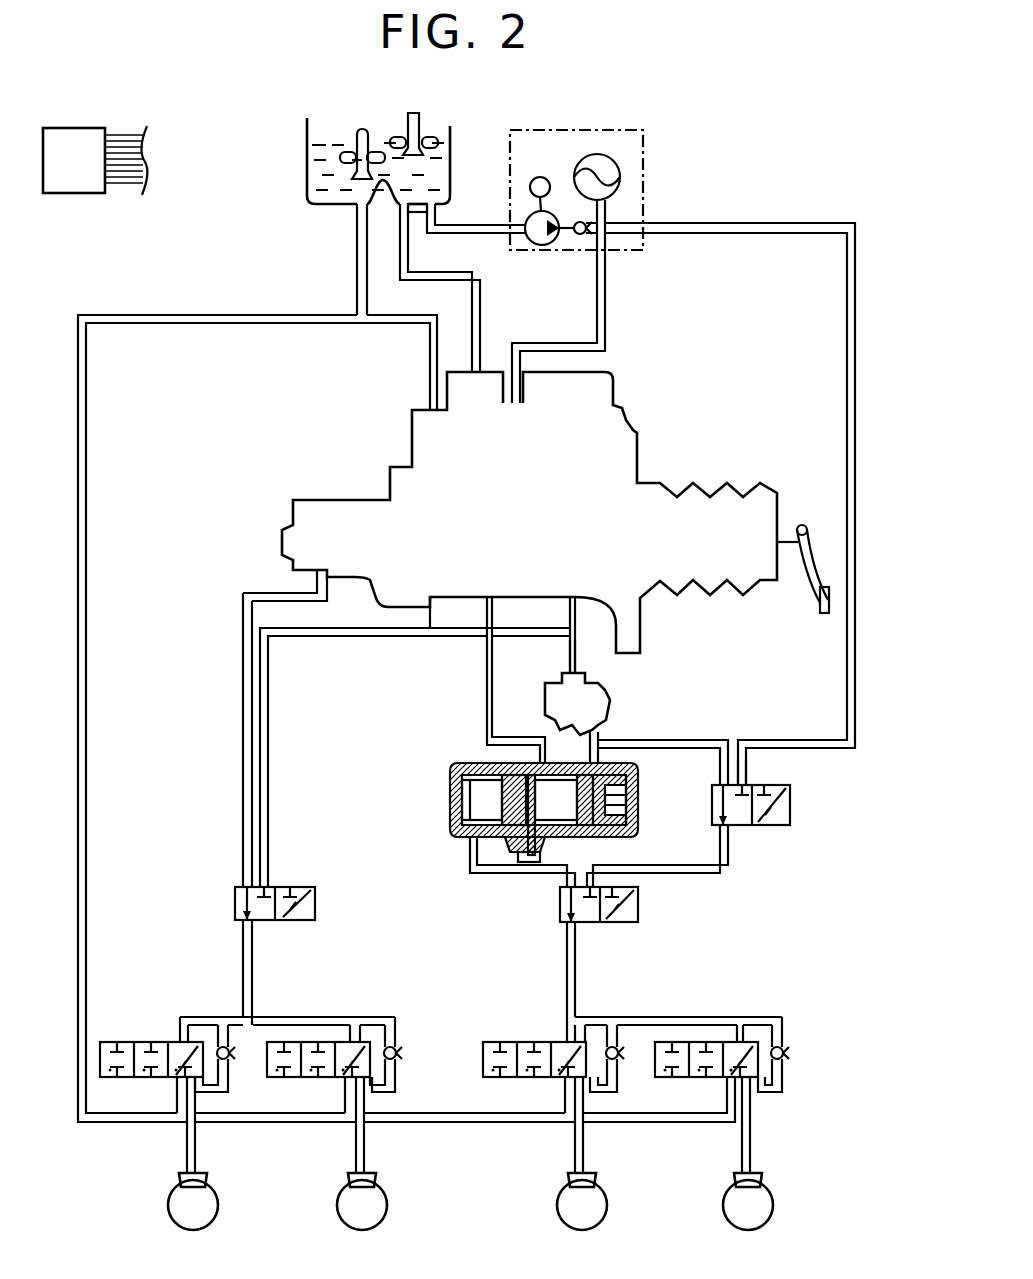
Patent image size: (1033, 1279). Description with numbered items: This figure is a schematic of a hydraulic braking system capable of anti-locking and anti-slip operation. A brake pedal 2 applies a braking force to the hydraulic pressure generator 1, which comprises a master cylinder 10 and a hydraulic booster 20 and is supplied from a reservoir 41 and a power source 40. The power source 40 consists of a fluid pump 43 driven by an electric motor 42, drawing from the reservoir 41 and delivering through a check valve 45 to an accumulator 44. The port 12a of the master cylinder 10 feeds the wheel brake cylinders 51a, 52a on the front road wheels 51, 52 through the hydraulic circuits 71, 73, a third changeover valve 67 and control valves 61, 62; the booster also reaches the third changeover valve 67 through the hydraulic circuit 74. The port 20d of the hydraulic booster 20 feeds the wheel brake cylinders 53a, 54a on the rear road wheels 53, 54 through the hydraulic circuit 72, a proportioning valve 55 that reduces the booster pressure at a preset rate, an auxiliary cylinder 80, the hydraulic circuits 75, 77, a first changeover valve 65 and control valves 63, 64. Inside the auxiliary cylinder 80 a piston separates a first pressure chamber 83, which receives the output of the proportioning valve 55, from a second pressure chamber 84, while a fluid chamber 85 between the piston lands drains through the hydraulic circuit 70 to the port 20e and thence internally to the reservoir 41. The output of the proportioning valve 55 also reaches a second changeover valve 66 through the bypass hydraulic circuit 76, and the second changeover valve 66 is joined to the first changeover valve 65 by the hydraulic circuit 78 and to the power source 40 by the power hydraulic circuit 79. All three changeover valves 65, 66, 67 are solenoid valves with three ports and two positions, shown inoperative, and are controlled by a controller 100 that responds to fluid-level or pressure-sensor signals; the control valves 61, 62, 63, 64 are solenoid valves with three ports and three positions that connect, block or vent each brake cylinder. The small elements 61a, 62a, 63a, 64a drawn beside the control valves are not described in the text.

The hydraulic pressure generator 1 is at (536, 515).
The brake pedal 2 is at (818, 602).
The master cylinder 10 is at (409, 494).
The port 12a is at (333, 578).
The hydraulic booster 20 is at (603, 515).
The port 20d is at (539, 635).
The port 20e is at (461, 616).
The power source 40 is at (615, 198).
The reservoir 41 is at (306, 190).
The electric motor 42 is at (538, 177).
The fluid pump 43 is at (536, 243).
The accumulator 44 is at (598, 155).
The check valve 45 is at (578, 240).
The front road wheel 51 is at (216, 1206).
The wheel brake cylinder 51a is at (200, 1175).
The front road wheel 52 is at (385, 1206).
The wheel brake cylinder 52a is at (369, 1175).
The rear road wheel 53 is at (605, 1206).
The wheel brake cylinder 53a is at (588, 1175).
The rear road wheel 54 is at (771, 1206).
The wheel brake cylinder 54a is at (756, 1175).
The proportioning valve 55 is at (602, 706).
The control valve 61 is at (170, 1042).
The check valve 61a is at (229, 1057).
The control valve 62 is at (335, 1042).
The check valve 62a is at (396, 1057).
The control valve 63 is at (540, 1042).
The check valve 63a is at (618, 1057).
The control valve 64 is at (715, 1042).
The check valve 64a is at (783, 1057).
The first changeover valve 65 is at (560, 900).
The second changeover valve 66 is at (790, 805).
The third changeover valve 67 is at (315, 902).
The hydraulic circuit 70 is at (487, 700).
The hydraulic circuit 71 is at (243, 660).
The hydraulic circuit 72 is at (570, 655).
The hydraulic circuit 73 is at (243, 945).
The hydraulic circuit 74 is at (412, 632).
The hydraulic circuit 75 is at (468, 860).
The hydraulic circuit 76 is at (680, 740).
The hydraulic circuit 77 is at (575, 945).
The hydraulic circuit 78 is at (712, 873).
The hydraulic circuit 79 is at (790, 740).
The auxiliary cylinder 80 is at (542, 811).
The first pressure chamber 83 is at (628, 790).
The second pressure chamber 84 is at (475, 800).
The fluid chamber 85 is at (590, 827).
The controller 100 is at (88, 192).